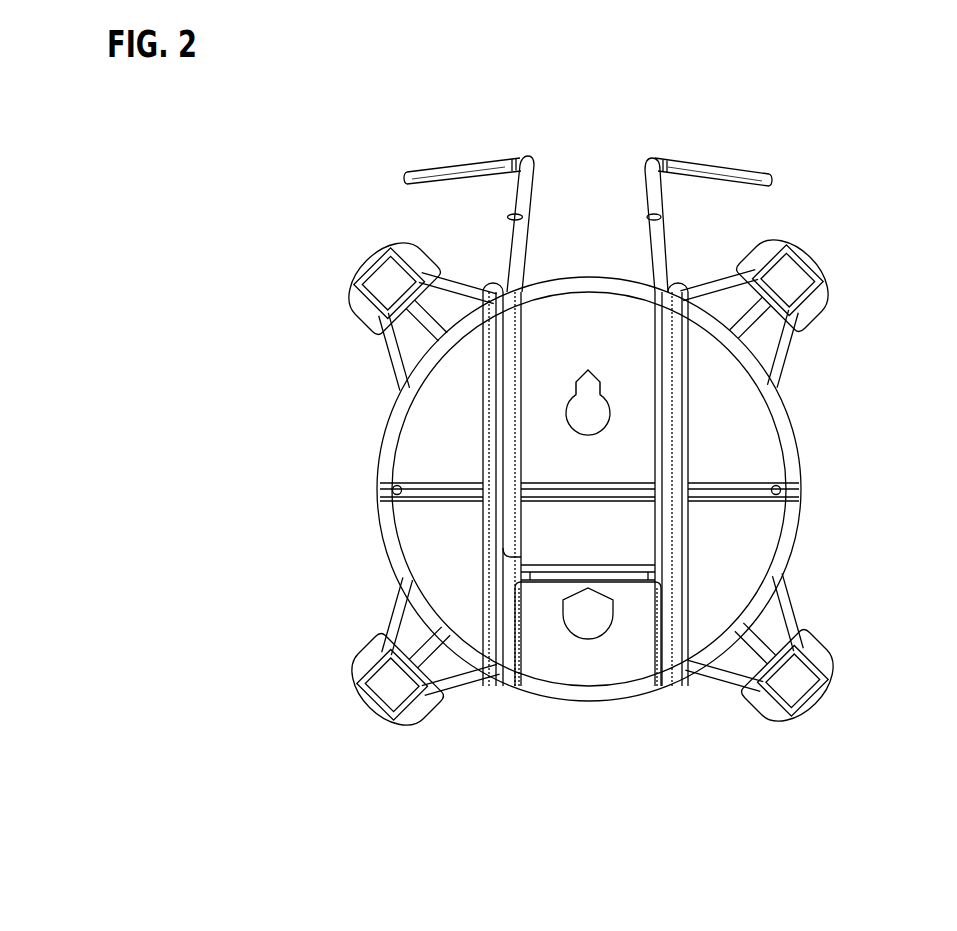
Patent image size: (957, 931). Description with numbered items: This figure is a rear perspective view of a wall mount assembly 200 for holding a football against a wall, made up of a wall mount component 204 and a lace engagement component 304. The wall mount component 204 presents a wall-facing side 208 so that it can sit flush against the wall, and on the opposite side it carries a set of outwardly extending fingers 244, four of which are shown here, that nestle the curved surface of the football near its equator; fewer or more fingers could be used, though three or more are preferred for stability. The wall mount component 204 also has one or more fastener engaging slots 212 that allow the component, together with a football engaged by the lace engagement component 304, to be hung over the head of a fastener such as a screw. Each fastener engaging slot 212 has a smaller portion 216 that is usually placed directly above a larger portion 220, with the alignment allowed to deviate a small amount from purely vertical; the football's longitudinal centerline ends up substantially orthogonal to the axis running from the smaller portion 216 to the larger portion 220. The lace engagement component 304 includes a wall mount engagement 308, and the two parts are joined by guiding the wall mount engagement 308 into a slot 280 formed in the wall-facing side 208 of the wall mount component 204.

The wall mount assembly 200 is at (152, 138).
The wall mount component 204 is at (378, 538).
The wall-facing side 208 is at (740, 548).
The fastener engaging slot 212 is at (506, 388).
The smaller portion 216 is at (583, 375).
The larger portion 220 is at (563, 421).
The finger 244 is at (420, 718).
The slot 280 is at (553, 563).
The lace engagement component 304 is at (472, 167).
The wall mount engagement 308 is at (668, 387).